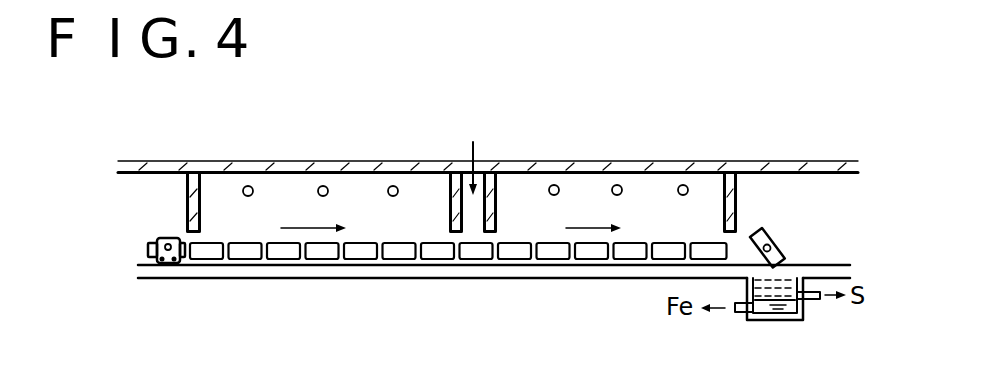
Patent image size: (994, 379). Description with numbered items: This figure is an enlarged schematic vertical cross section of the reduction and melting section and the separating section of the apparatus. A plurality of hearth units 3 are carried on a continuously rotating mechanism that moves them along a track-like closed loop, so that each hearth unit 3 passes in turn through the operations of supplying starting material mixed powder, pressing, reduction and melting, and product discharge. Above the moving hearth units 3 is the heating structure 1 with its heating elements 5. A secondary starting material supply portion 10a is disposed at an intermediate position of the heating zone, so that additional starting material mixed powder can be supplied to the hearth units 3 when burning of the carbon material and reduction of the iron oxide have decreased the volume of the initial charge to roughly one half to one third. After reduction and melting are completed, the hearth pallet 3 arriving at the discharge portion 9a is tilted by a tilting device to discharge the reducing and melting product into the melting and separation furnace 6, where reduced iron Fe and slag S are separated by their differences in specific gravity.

The furnace body 1 is at (298, 195).
The hearth unit 3 is at (247, 252).
The nozzles 5 is at (248, 186).
The melting and separation furnace 6 is at (803, 310).
The discharge portion 9a is at (796, 203).
The secondary starting material supply portion 10a is at (479, 199).